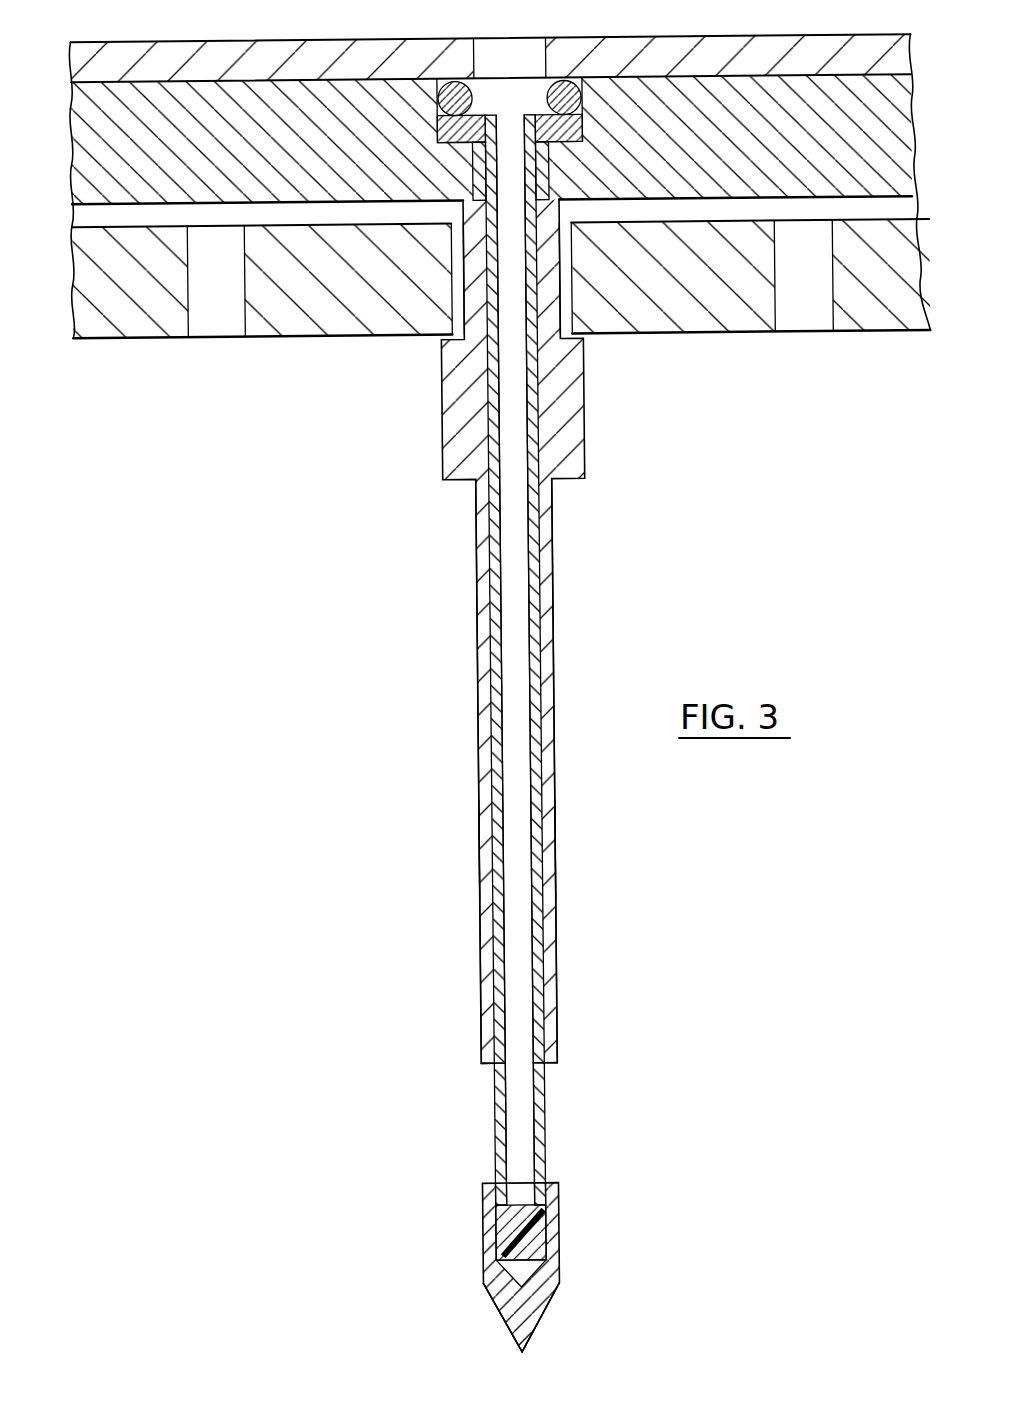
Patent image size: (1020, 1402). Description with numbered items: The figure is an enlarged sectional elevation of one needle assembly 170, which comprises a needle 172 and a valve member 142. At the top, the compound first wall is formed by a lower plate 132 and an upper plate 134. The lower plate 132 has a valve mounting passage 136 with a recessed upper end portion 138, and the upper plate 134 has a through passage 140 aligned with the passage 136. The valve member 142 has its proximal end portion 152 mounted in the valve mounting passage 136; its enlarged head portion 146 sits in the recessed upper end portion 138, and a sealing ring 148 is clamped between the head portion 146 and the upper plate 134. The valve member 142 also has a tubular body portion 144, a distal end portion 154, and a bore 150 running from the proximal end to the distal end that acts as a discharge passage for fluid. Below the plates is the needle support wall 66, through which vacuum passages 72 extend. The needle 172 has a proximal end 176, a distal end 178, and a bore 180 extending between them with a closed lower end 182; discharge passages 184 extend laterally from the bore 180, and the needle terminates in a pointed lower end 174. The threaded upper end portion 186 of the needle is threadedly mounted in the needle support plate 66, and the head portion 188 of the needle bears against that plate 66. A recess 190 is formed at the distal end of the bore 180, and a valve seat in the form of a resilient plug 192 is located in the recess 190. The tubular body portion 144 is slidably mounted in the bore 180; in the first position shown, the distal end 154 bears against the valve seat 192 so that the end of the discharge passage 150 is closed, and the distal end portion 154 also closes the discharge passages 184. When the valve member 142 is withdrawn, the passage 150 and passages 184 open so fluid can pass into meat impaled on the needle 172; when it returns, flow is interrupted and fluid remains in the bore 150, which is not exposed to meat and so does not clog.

The needle support wall 66 is at (717, 307).
The vacuum passages 72 is at (258, 312).
The lower plate 132 is at (291, 86).
The upper plate 134 is at (372, 56).
The valve mounting passage 136 is at (548, 176).
The recessed upper end portion 138 is at (595, 92).
The through passage 140 is at (512, 48).
The valve member 142 is at (482, 174).
The tubular body portion 144 is at (492, 777).
The enlarged head portion 146 is at (585, 130).
The sealing ring 148 is at (432, 92).
The bore 150 is at (517, 1128).
The proximal end portion 152 is at (450, 140).
The distal end portion 154 is at (494, 1188).
The needle assembly 170 is at (572, 265).
The needle 172 is at (484, 849).
The pointed lower end 174 is at (506, 1318).
The proximal end 176 is at (575, 432).
The distal end 178 is at (560, 1238).
The bore 180 is at (490, 1022).
The closed lower end 182 is at (500, 1281).
The discharge passages 184 is at (496, 1100).
The threaded upper end portion 186 is at (572, 308).
The head portion 188 is at (455, 406).
The recess 190 is at (548, 1250).
The resilient plug 192 is at (503, 1223).